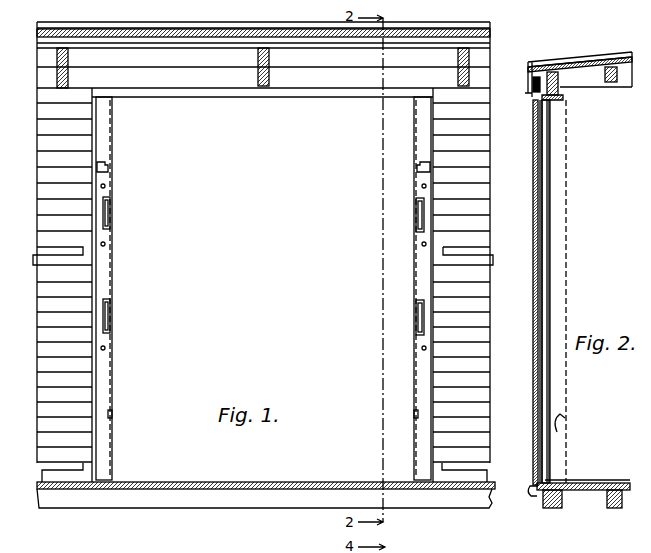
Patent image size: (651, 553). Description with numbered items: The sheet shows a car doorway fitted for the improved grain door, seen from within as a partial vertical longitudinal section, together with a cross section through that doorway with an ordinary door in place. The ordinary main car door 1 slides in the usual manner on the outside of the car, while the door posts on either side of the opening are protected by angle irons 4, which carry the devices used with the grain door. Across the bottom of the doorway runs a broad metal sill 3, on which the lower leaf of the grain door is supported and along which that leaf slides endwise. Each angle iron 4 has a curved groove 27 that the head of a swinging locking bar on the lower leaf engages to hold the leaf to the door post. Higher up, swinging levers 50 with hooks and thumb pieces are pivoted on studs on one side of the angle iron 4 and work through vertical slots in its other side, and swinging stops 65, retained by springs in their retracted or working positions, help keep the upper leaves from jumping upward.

In FIG. 2, the main car door 1 is at (533, 297).
In FIG. 1, the metal sill 3 is at (311, 474).
In FIG. 2, the metal sill 3 is at (581, 477).
In FIG. 1, the angle iron 4 is at (101, 122).
In FIG. 2, the angle iron 4 is at (562, 188).
In FIG. 1, the curved groove 27 is at (113, 413).
In FIG. 2, the curved groove 27 is at (562, 422).
In FIG. 1, the swinging lever 50 is at (112, 210).
In FIG. 1, the swinging stop 65 is at (110, 168).